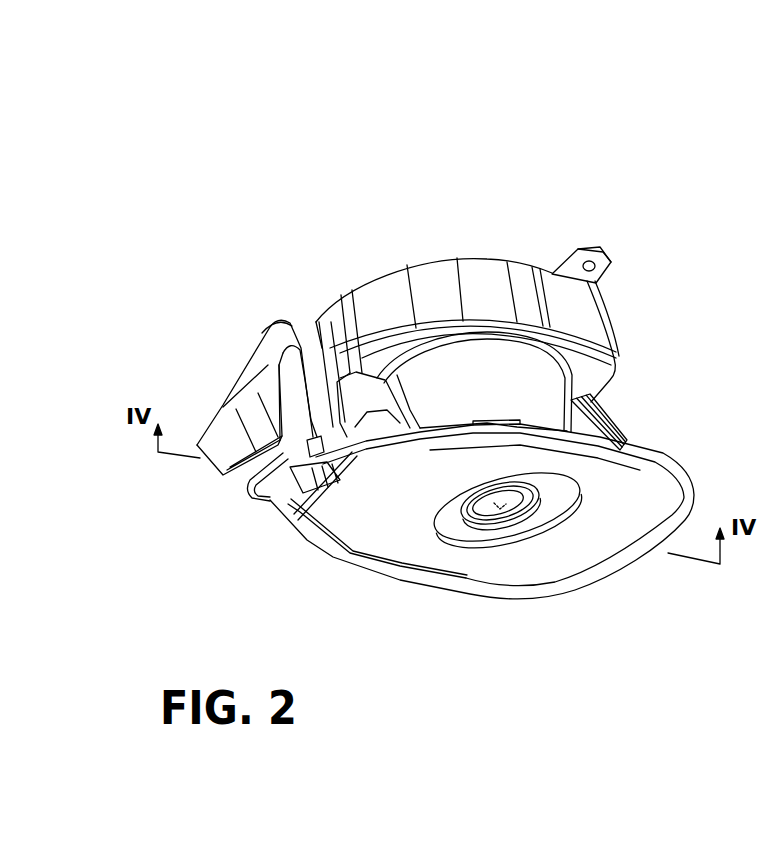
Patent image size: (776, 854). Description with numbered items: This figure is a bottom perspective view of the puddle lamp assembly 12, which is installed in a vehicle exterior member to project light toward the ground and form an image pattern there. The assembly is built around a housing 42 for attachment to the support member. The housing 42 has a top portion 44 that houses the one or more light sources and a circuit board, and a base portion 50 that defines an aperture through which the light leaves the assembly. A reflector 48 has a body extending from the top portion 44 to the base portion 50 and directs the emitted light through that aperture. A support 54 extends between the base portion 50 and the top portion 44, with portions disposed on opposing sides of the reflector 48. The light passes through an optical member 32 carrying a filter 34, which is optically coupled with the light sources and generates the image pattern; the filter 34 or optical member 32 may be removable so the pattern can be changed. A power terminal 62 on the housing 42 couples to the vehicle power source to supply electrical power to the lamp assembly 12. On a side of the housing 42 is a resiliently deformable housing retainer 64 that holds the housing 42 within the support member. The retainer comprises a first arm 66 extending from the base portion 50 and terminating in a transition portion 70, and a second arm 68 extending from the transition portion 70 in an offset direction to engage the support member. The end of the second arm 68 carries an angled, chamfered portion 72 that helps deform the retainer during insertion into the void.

The puddle lamp assembly 12 is at (516, 222).
The optical member 32 is at (524, 528).
The filter 34 is at (492, 505).
The housing 42 is at (412, 270).
The top portion 44 is at (478, 262).
The reflector 48 is at (538, 397).
The base portion 50 is at (666, 442).
The support 54 is at (355, 398).
The power terminal 62 is at (580, 246).
The housing retainer 64 is at (250, 318).
The first arm 66 is at (268, 502).
The second arm 68 is at (240, 372).
The transition portion 70 is at (284, 320).
The chamfered portion 72 is at (224, 452).